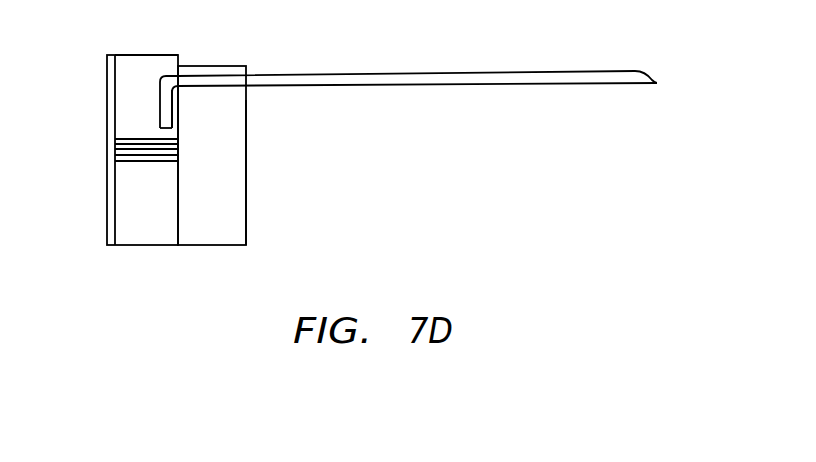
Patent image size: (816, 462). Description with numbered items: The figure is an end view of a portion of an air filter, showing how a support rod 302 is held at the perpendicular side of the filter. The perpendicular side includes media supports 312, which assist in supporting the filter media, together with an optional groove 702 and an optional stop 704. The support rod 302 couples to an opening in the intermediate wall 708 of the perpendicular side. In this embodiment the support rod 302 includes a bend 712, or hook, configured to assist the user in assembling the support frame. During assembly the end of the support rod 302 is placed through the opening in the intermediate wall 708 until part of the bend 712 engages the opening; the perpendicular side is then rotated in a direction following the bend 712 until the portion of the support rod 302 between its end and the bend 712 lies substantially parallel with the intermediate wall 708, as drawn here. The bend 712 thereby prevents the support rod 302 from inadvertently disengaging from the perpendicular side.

The support rod 302 is at (473, 71).
The media support 312 is at (223, 163).
The groove 702 is at (123, 155).
The stop 704 is at (122, 68).
The intermediate wall 708 is at (180, 192).
The bend 712 is at (161, 77).